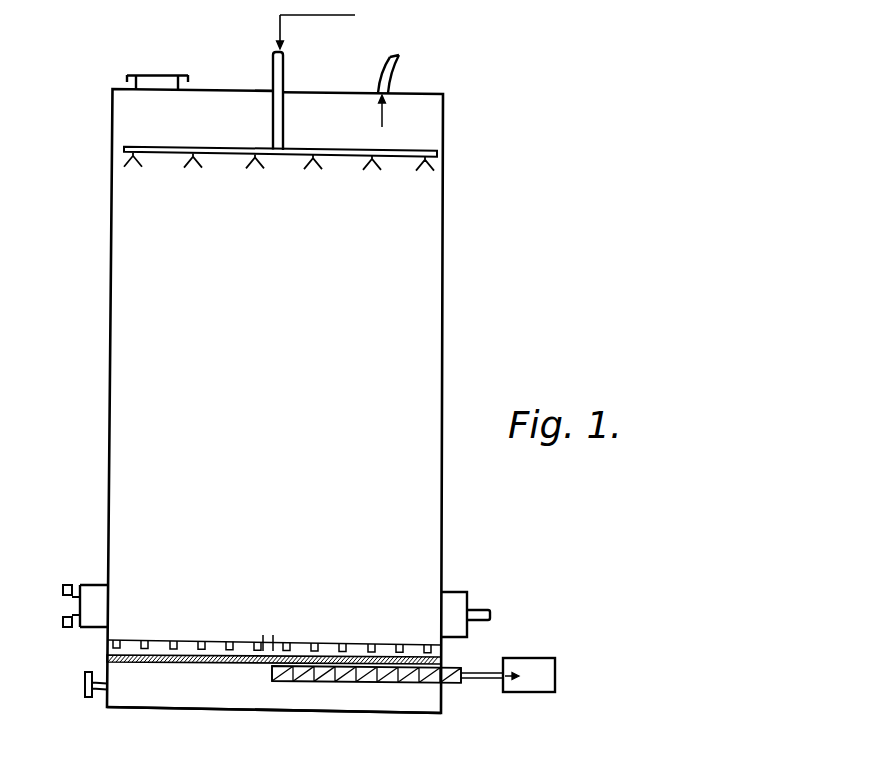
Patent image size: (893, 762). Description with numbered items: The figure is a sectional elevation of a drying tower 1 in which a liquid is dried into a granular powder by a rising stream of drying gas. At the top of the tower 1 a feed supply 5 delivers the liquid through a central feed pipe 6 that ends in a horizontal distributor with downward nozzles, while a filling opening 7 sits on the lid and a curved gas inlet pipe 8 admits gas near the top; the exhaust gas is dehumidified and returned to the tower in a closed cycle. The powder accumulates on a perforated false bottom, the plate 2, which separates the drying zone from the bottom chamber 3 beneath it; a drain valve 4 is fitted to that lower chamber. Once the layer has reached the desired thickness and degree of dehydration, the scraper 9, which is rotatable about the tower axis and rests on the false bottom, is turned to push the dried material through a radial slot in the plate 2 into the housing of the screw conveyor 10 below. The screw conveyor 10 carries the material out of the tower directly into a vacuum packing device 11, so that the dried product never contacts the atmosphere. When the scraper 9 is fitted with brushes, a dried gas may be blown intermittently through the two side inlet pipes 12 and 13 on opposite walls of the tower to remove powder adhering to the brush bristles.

The drying tower 1 is at (110, 265).
The perforated plate 2 is at (107, 657).
The bottom chamber 3 is at (153, 697).
The drain valve 4 is at (85, 684).
The feed supply 5 is at (320, 16).
The feed pipe with distributor 6 is at (285, 127).
The filling opening 7 is at (155, 74).
The gas inlet pipe 8 is at (400, 72).
The scraper 9 is at (286, 642).
The screw conveyor 10 is at (455, 683).
The vacuum packing device 11 is at (518, 657).
The inlet pipe 12 is at (63, 602).
The inlet pipe 13 is at (470, 592).